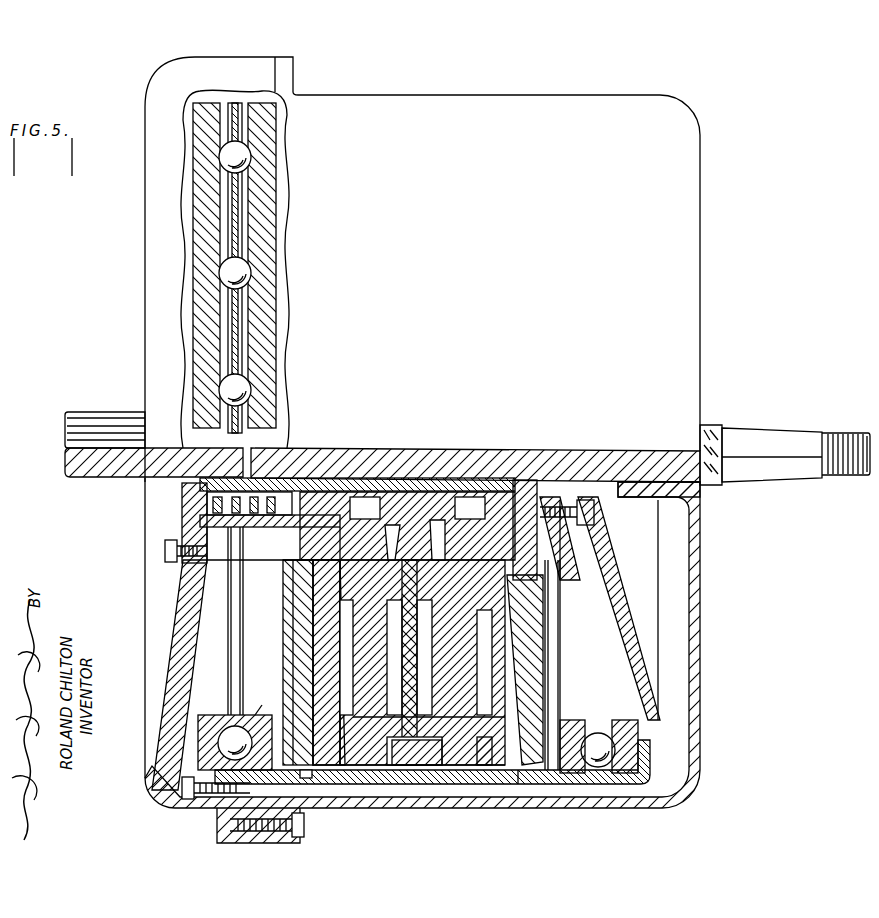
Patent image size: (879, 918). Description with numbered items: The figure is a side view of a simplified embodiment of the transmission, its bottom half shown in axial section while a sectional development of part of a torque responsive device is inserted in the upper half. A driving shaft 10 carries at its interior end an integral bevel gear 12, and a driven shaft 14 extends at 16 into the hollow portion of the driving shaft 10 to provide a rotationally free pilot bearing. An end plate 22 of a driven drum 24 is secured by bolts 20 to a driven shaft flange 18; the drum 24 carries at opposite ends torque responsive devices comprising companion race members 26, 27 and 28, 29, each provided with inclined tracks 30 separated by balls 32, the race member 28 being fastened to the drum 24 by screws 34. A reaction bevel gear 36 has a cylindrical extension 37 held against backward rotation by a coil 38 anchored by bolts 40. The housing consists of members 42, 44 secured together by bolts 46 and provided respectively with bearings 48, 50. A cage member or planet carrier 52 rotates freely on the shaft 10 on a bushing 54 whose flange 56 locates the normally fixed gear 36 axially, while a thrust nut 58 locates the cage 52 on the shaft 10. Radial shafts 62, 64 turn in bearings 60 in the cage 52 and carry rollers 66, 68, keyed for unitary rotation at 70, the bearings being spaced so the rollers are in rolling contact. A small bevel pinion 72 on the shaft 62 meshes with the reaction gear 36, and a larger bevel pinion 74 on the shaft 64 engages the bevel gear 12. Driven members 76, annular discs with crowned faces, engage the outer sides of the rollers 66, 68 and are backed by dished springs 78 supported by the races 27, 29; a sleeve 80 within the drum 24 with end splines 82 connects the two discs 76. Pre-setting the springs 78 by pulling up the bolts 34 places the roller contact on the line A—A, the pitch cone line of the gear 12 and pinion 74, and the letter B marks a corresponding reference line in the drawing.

The driving shaft 10 is at (66, 460).
The bevel gear 12 is at (555, 545).
The driven shaft 14 is at (745, 432).
The pilot bearing extension 16 is at (392, 478).
The driven shaft flange 18 is at (548, 490).
The bolts 20 is at (596, 512).
The end plate 22 is at (592, 590).
The driven drum 24 is at (585, 784).
The race member 26 is at (640, 740).
The race member 27 is at (568, 720).
The race member 28 is at (207, 203).
The race member 29 is at (270, 180).
The inclined tracks 30 is at (246, 322).
The balls 32 is at (252, 276).
The screws 34 is at (182, 787).
The reaction bevel gear 36 is at (330, 549).
The cylindrical extension 37 is at (200, 527).
The coil 38 is at (200, 512).
The bolts 40 is at (177, 552).
The housing member 42 is at (178, 613).
The housing member 44 is at (690, 201).
The bolts 46 is at (230, 831).
The bearing 48 is at (182, 490).
The bearing 50 is at (638, 488).
The cage member 52 is at (418, 478).
The bushing 54 is at (342, 478).
The flange 56 is at (318, 478).
The thrust nut 58 is at (300, 476).
The bearings 60 is at (478, 752).
The radial shaft 62 is at (350, 750).
The radial shaft 64 is at (480, 770).
The roller 66 is at (330, 641).
The roller 68 is at (505, 690).
The key 70 is at (330, 594).
The small bevel pinion 72 is at (330, 563).
The larger bevel pinion 74 is at (510, 561).
The driven members 76 is at (330, 626).
The dished springs 78 is at (330, 611).
The sleeve 80 is at (380, 765).
The end splines 82 is at (320, 784).
The pitch cone line point A is at (455, 478).
The surface B is at (370, 478).